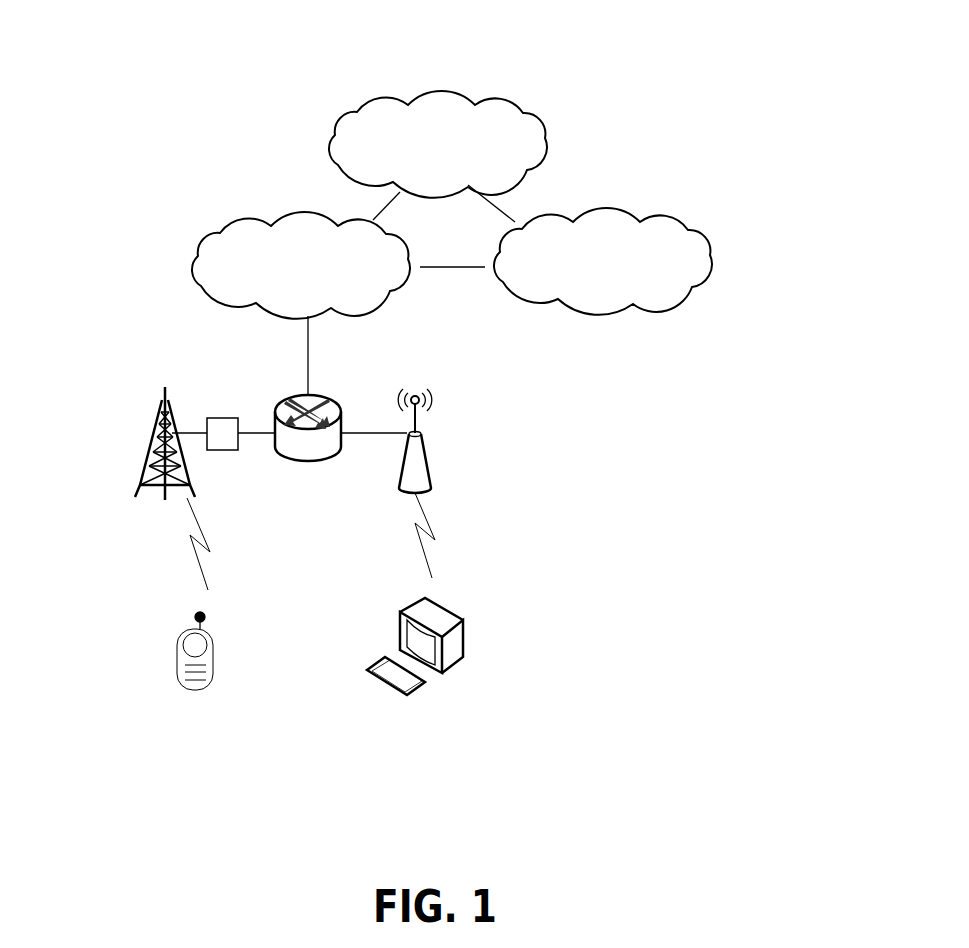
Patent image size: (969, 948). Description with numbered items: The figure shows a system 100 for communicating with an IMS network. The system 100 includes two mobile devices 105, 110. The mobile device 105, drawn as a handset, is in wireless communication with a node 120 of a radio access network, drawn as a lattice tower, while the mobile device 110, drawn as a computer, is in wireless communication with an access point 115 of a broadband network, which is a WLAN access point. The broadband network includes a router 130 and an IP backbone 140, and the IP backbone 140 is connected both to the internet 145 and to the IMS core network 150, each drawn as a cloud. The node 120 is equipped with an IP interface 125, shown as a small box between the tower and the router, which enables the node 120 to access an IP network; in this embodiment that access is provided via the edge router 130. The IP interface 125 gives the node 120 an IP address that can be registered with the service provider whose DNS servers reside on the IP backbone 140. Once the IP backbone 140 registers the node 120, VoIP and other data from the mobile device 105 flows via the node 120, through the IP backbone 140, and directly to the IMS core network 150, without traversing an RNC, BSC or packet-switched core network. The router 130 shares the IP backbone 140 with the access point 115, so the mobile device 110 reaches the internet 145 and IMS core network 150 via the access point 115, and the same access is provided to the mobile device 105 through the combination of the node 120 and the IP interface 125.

The system 100 is at (633, 98).
The mobile device 105 is at (177, 668).
The mobile device 110 is at (465, 658).
The access point 115 is at (425, 445).
The node 120 is at (158, 425).
The IP interface 125 is at (230, 416).
The router 130 is at (318, 393).
The IP backbone 140 is at (235, 223).
The internet 145 is at (663, 220).
The IMS core network 150 is at (437, 95).